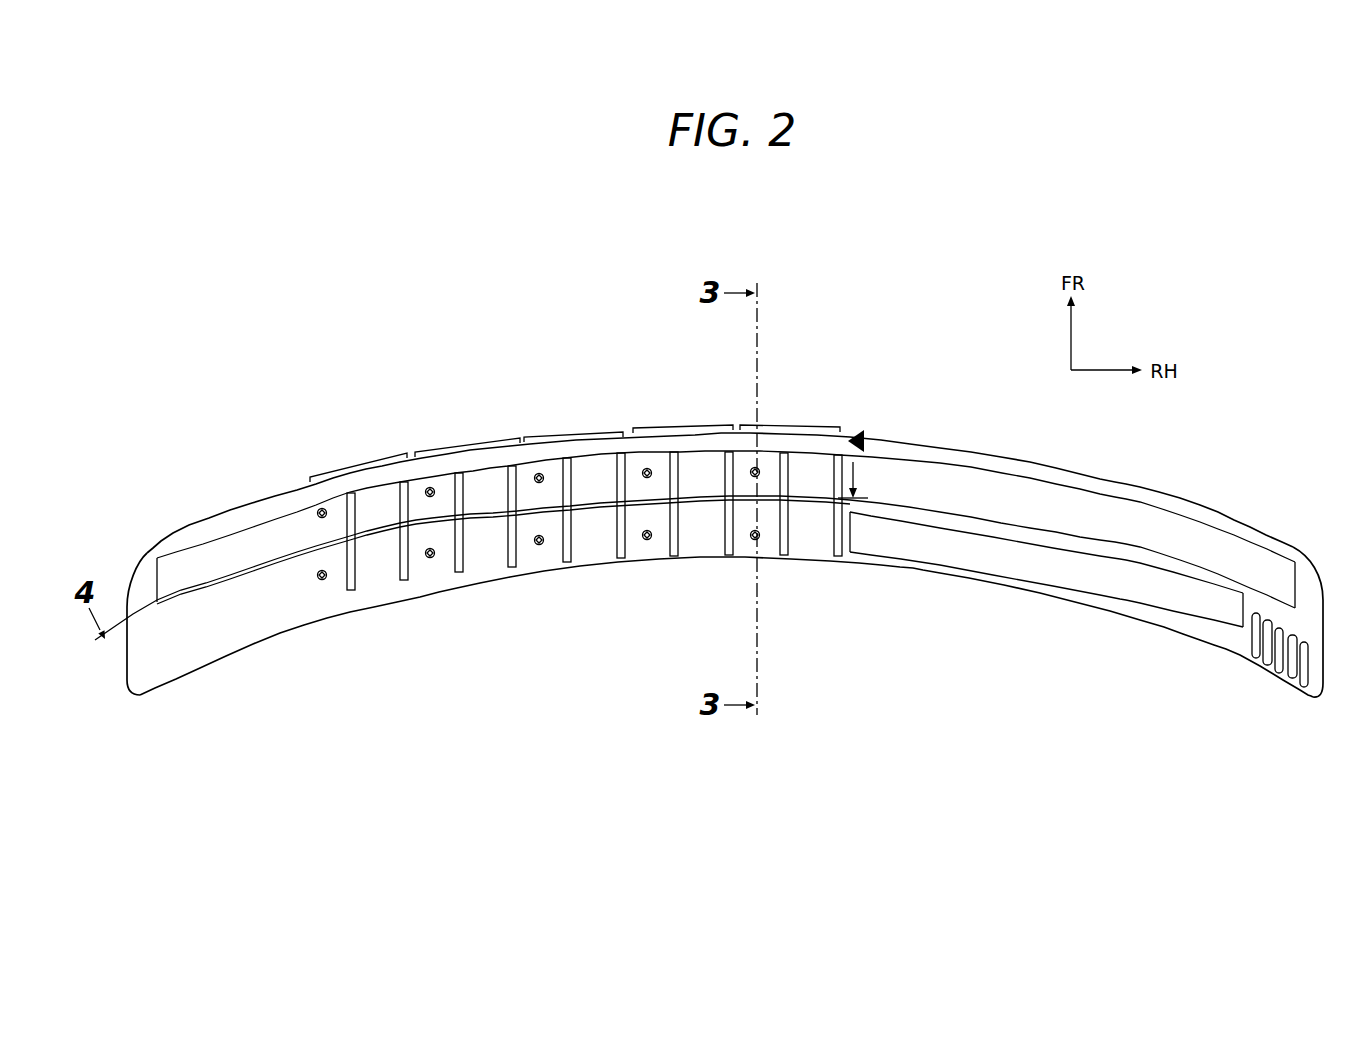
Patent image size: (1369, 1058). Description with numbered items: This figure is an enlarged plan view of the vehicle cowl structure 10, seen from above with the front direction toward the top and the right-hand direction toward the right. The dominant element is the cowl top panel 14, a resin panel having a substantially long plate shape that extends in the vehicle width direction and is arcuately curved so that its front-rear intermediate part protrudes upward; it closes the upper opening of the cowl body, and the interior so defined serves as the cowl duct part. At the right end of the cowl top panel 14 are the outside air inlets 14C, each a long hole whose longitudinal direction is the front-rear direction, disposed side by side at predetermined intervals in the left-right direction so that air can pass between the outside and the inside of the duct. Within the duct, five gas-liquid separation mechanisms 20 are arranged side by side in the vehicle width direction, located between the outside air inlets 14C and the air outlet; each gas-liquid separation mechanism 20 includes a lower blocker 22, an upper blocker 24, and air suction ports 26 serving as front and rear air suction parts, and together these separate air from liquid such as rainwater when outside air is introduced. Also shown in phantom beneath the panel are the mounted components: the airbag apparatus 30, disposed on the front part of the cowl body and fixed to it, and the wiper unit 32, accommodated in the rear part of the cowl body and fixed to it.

The cowl structure 10 is at (871, 355).
The cowl top panel 14 is at (272, 630).
The outside air inlets 14C is at (1245, 657).
The gas-liquid separation mechanism 20 is at (357, 457).
The lower blocker 22 is at (325, 518).
The upper blocker 24 is at (353, 587).
The air suction ports 26 is at (324, 580).
The airbag apparatus 30 is at (967, 461).
The wiper unit 32 is at (967, 571).